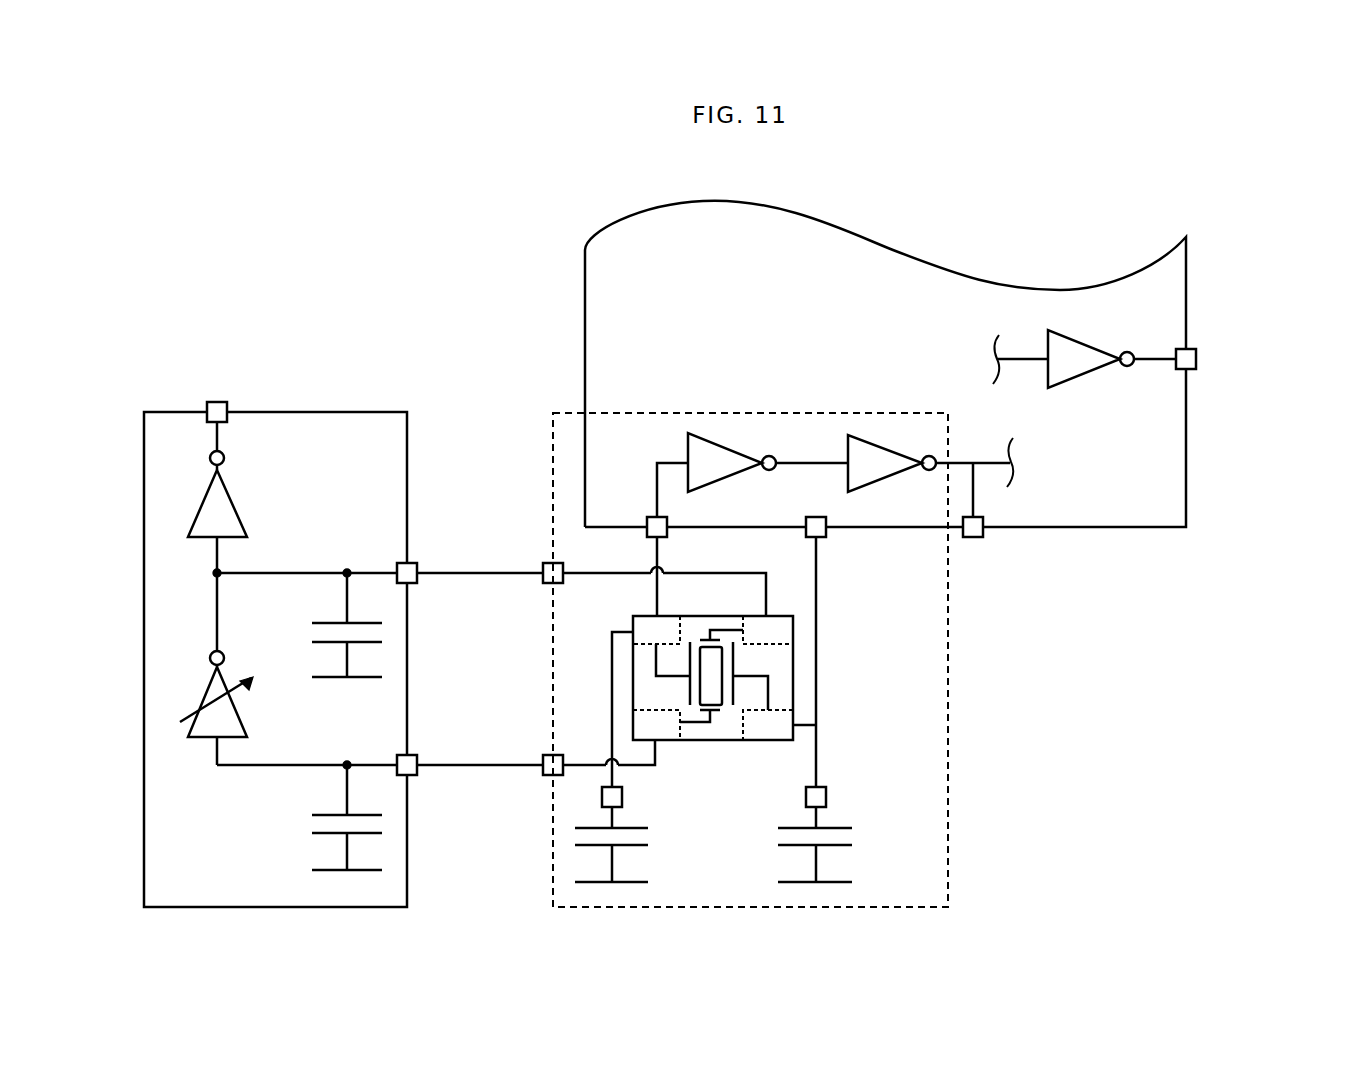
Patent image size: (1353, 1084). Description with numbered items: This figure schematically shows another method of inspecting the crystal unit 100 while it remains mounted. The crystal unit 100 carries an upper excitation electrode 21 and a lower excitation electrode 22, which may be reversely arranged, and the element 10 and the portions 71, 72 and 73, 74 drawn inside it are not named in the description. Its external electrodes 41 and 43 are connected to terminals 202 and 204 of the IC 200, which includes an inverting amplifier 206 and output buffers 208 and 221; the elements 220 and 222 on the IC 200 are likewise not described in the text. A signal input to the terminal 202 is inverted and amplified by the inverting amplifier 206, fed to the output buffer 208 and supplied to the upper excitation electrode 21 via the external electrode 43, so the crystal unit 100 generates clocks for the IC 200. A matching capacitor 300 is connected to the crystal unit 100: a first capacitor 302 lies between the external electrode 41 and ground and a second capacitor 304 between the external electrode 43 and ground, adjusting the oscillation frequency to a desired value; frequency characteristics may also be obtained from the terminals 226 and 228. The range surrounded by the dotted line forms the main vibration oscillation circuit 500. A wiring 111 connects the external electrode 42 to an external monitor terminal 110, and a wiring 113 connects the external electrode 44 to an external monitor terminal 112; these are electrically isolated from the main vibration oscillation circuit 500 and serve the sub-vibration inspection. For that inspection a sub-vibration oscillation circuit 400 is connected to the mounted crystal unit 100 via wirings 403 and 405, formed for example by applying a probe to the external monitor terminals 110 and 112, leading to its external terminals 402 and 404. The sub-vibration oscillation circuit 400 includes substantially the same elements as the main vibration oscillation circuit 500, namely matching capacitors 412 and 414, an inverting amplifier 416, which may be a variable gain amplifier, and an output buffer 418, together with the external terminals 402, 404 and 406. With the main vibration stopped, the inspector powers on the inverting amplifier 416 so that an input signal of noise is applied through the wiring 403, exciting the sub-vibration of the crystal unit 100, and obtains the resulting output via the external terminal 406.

The resonator element 10 is at (777, 643).
The upper excitation electrode 21 is at (690, 654).
The lower excitation electrode 22 is at (736, 654).
The external electrode 41 is at (644, 614).
The external electrode 42 is at (786, 616).
The external electrode 43 is at (764, 738).
The external electrode 44 is at (676, 738).
The first lead electrode 71 is at (723, 720).
The second lead electrode 72 is at (712, 712).
The first connection wiring 73 is at (712, 622).
The second connection wiring 74 is at (712, 677).
The crystal unit 100 is at (741, 673).
The external monitor terminal 110 is at (542, 561).
The wiring 111 is at (580, 578).
The external monitor terminal 112 is at (540, 778).
The wiring 113 is at (568, 772).
The IC 200 is at (1192, 432).
The terminal 202 is at (648, 518).
The terminal 204 is at (828, 538).
The inverting amplifier 206 is at (732, 452).
The output buffer 208 is at (890, 452).
The output terminal 220 is at (984, 538).
The output buffer 221 is at (1090, 343).
The output terminal 222 is at (1198, 352).
The terminal 226 is at (622, 796).
The terminal 228 is at (828, 788).
The matching capacitor 300 is at (751, 849).
The first capacitor 302 is at (640, 840).
The second capacitor 304 is at (792, 840).
The sub-vibration oscillation circuit 400 is at (364, 416).
The external terminal 402 is at (418, 566).
The wiring 403 is at (470, 578).
The external terminal 404 is at (420, 778).
The wiring 405 is at (488, 762).
The external terminal 406 is at (230, 404).
The matching capacitor 412 is at (308, 628).
The matching capacitor 414 is at (308, 824).
The inverting amplifier 416 is at (248, 734).
The output buffer 418 is at (246, 516).
The main vibration oscillation circuit 500 is at (950, 766).